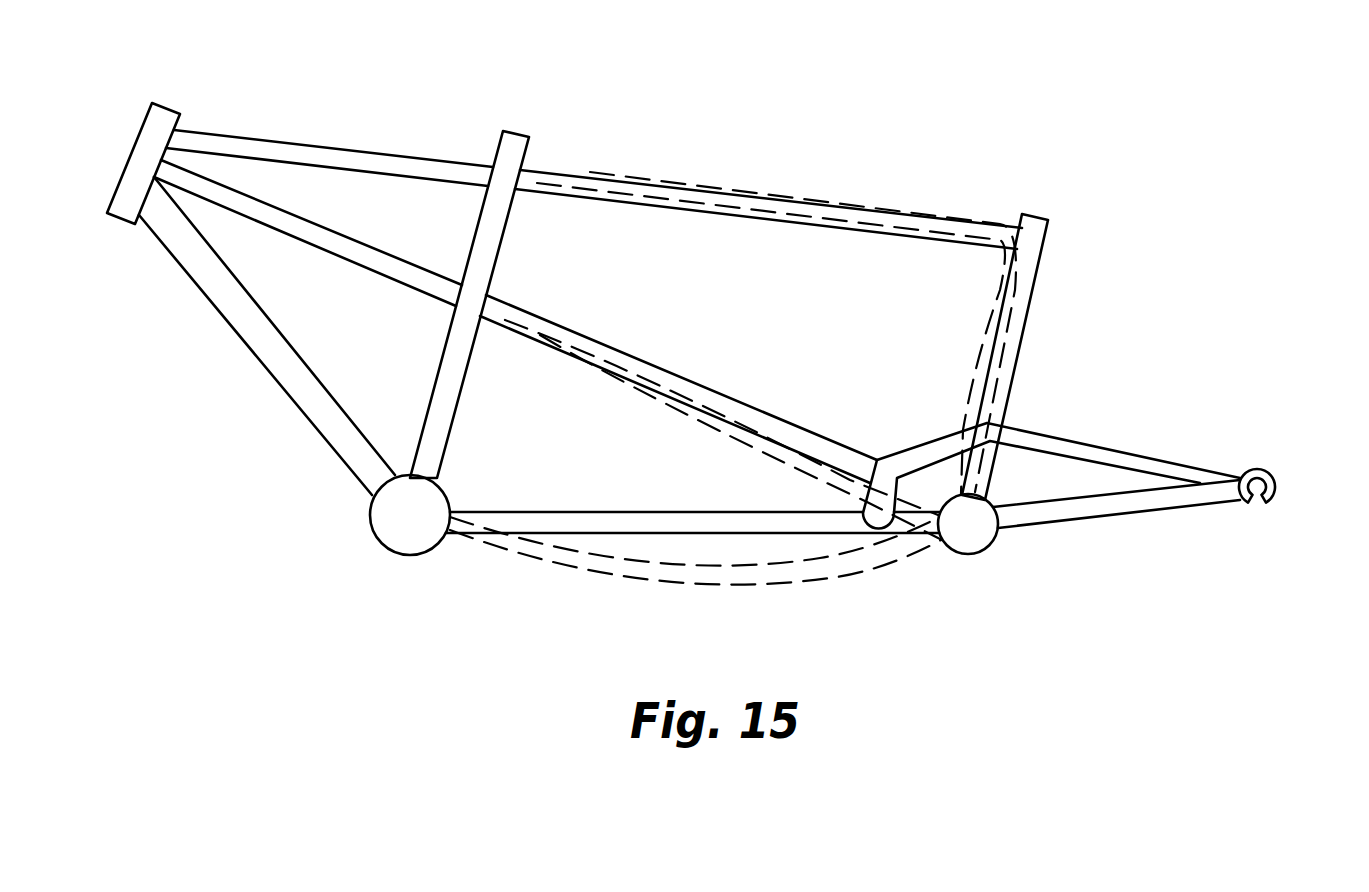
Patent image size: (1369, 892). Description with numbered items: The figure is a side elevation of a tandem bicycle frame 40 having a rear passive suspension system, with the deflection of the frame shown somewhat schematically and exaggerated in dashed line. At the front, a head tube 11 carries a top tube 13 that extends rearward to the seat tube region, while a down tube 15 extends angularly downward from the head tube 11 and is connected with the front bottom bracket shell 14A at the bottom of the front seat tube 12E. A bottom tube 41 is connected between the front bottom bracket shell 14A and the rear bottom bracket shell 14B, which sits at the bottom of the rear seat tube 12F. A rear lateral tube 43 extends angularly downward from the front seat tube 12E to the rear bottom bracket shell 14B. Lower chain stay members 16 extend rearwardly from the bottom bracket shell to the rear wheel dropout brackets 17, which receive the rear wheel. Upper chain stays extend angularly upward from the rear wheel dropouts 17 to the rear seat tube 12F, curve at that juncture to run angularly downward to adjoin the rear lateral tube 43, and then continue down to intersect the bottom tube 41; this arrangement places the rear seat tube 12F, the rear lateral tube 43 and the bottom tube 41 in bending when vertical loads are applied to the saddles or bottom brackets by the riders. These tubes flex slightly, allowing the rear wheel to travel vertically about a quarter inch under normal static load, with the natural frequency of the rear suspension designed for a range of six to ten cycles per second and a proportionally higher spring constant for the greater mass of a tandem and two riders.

The tandem bicycle frame 40 is at (645, 86).
The head tube 11 is at (130, 154).
The top tube 13 is at (409, 155).
The front seat tube 12E is at (510, 215).
The rear lateral tube 43 is at (436, 208).
The down tube 15 is at (293, 352).
The bottom tube 41 is at (655, 512).
The front bottom bracket shell 14A is at (393, 528).
The rear bottom bracket shell 14B is at (965, 542).
The rear seat tube 12F is at (1027, 332).
The lower chain stay members 16 is at (1090, 518).
The rear wheel dropout brackets 17 is at (1277, 480).